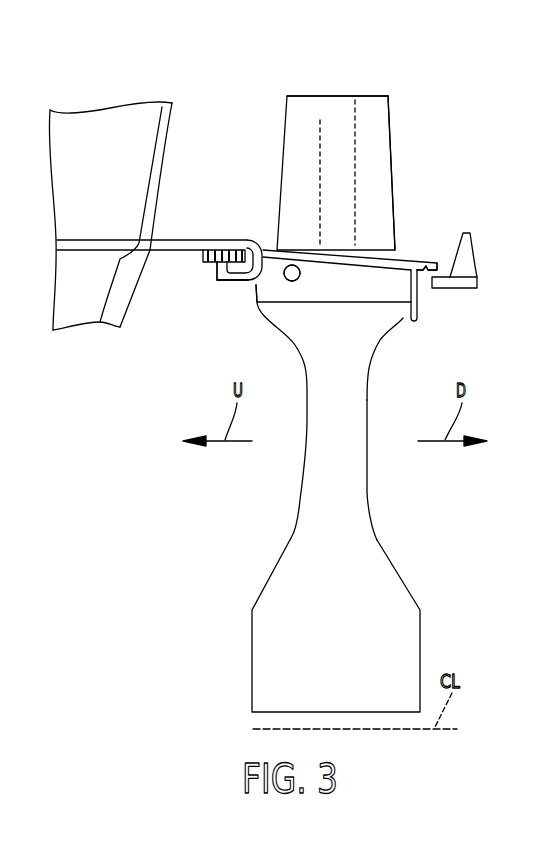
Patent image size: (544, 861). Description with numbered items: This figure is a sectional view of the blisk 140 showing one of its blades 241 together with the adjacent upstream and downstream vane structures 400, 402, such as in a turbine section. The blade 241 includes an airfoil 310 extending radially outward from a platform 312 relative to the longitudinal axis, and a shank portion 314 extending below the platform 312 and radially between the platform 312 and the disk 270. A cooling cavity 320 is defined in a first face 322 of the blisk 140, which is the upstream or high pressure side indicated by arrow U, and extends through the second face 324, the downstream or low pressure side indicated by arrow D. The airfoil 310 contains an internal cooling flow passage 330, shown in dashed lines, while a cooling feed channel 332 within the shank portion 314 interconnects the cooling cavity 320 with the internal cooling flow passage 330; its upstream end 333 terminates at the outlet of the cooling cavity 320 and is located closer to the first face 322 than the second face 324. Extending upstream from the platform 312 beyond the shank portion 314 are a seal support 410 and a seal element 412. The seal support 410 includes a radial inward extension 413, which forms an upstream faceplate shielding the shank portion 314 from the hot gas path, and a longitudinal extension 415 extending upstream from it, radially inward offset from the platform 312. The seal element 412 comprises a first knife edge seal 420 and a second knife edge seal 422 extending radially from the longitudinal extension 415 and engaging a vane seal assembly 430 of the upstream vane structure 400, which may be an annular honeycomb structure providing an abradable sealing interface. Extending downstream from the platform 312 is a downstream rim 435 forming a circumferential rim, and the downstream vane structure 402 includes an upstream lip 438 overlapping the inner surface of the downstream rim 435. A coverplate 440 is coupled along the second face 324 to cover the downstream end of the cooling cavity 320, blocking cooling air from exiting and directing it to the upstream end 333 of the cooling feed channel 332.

The blisk 140 is at (309, 80).
The blades 241 is at (372, 108).
The disk 270 is at (368, 550).
The airfoil 310 is at (384, 172).
The platform 312 is at (382, 258).
The shank portion 314 is at (362, 290).
The cooling cavity 320 is at (402, 322).
The first face 322 is at (292, 538).
The second face 324 is at (368, 498).
The internal cooling flow passage 330 is at (358, 146).
The cooling feed channel 332 is at (297, 283).
The upstream end 333 is at (291, 283).
The upstream vane structure 400 is at (96, 122).
The downstream vane structure 402 is at (488, 256).
The seal support 410 is at (246, 292).
The seal element 412 is at (200, 276).
The radial inward extension 413 is at (248, 247).
The longitudinal extension 415 is at (225, 285).
The first radially extending knife edge seal 420 is at (208, 256).
The second radially extending knife edge seal 422 is at (232, 250).
The vane seal assembly 430 is at (213, 250).
The downstream rim 435 is at (435, 262).
The upstream lip 438 is at (443, 280).
The coverplate 440 is at (418, 307).